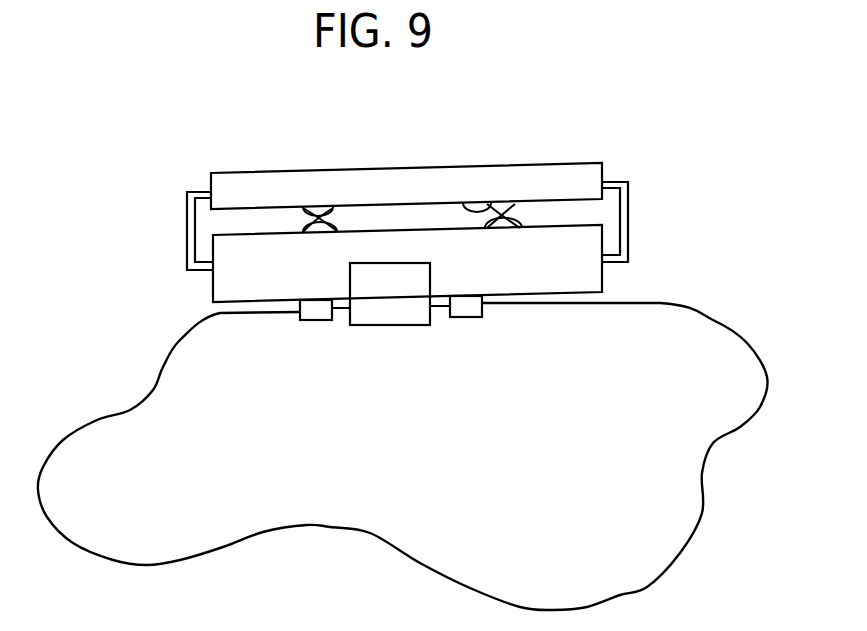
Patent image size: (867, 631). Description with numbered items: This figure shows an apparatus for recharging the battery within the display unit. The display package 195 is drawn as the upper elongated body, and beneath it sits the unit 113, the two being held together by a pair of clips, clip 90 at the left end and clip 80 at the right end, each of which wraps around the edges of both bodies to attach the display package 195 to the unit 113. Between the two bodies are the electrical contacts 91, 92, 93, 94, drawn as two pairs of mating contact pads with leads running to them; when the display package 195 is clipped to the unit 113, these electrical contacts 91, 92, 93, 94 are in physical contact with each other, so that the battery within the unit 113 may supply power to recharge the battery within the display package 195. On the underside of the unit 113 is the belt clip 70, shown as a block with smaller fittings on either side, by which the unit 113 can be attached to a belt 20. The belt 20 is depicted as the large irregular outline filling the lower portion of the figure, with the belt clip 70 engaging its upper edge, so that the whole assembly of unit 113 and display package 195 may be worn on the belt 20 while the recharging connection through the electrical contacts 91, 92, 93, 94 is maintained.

The belt 20 is at (300, 527).
The belt clip 70 is at (398, 325).
The clip 80 is at (628, 205).
The clip 90 is at (187, 228).
The electrical contact 91 is at (337, 231).
The electrical contact 92 is at (517, 224).
The electrical contact 93 is at (305, 209).
The electrical contact 94 is at (477, 209).
The unit 113 is at (603, 277).
The display package 195 is at (567, 162).